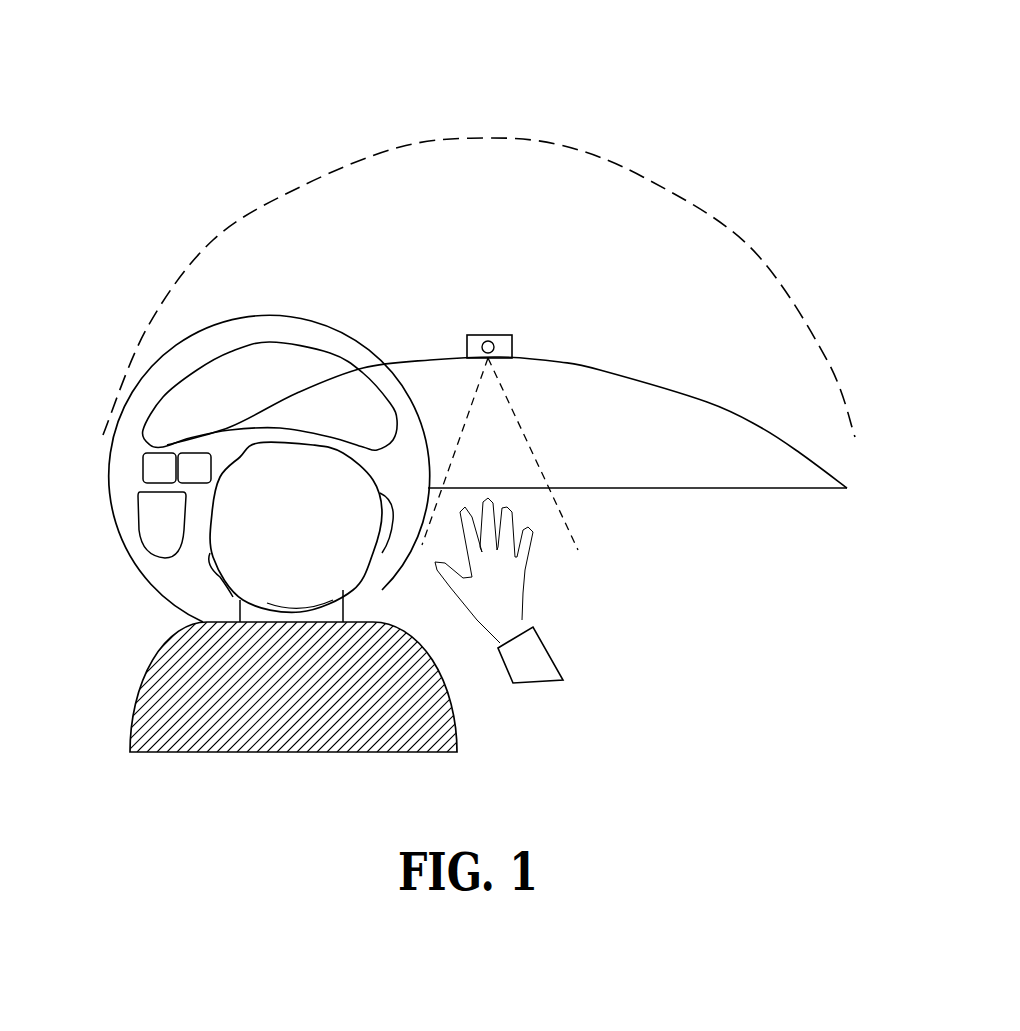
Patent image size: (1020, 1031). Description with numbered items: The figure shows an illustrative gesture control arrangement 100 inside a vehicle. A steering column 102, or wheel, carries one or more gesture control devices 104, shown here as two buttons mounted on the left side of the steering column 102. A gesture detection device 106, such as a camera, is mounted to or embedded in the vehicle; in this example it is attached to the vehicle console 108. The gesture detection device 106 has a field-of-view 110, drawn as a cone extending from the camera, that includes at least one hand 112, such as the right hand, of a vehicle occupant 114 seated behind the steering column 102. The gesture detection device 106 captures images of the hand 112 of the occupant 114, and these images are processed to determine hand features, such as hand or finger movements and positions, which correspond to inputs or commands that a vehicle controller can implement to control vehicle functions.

The gesture control arrangement 100 is at (643, 177).
The steering column 102 is at (247, 330).
The gesture control devices 104 is at (132, 448).
The gesture detection device 106 is at (487, 335).
The vehicle console 108 is at (707, 402).
The field-of-view 110 is at (472, 398).
The hand 112 is at (498, 575).
The vehicle occupant 114 is at (217, 594).